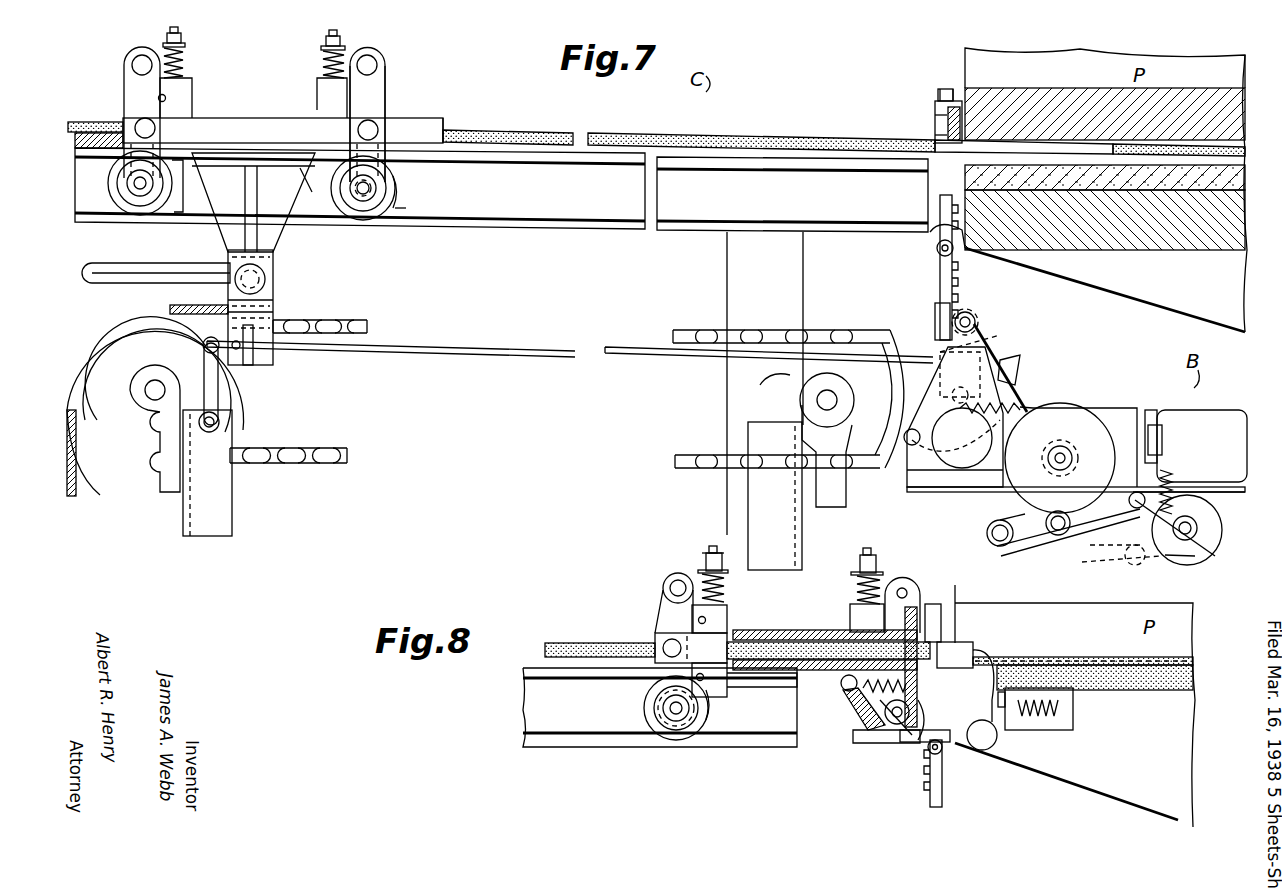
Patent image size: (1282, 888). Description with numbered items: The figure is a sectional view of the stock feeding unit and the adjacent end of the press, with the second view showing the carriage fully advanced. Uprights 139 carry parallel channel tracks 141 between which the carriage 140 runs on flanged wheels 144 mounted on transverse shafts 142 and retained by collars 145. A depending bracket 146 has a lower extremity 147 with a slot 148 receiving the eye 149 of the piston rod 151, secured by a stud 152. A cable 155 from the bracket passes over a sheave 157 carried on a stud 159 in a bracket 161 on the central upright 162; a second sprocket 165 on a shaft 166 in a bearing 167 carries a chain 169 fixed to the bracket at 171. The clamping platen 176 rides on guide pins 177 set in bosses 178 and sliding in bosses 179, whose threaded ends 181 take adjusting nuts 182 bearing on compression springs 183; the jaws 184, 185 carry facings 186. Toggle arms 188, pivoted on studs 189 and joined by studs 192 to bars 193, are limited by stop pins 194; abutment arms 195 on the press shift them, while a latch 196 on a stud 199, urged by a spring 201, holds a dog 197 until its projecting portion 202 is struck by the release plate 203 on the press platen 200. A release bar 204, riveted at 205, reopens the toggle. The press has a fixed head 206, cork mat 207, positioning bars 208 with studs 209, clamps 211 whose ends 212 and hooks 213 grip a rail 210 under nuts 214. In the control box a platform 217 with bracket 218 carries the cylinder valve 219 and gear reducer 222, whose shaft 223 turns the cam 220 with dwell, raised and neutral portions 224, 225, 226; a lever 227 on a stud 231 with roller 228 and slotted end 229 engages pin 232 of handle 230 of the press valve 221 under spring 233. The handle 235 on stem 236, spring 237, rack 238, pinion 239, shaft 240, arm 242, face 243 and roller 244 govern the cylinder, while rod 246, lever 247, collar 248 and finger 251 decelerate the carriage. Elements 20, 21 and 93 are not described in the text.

In FIG. 7, the upper guide rail 20 is at (682, 147).
In FIG. 7, the upper guide rail 21 is at (708, 138).
In FIG. 7, the chain 93 is at (886, 342).
In FIG. 7, the uprights 139 is at (804, 268).
In FIG. 7, the carriage 140 is at (308, 194).
In FIG. 8, the carriage 140 is at (760, 674).
In FIG. 7, the tracks 141 is at (501, 190).
In FIG. 8, the tracks 141 is at (736, 707).
In FIG. 7, the transverse shafts 142 is at (378, 183).
In FIG. 8, the transverse shafts 142 is at (672, 712).
In FIG. 7, the flanged wheels 144 is at (374, 210).
In FIG. 8, the flanged wheels 144 is at (686, 732).
In FIG. 7, the collars 145 is at (373, 190).
In FIG. 7, the depending bracket 146 is at (253, 202).
In FIG. 7, the lower extremity 147 is at (273, 291).
In FIG. 7, the slot 148 is at (272, 266).
In FIG. 7, the eye 149 is at (228, 264).
In FIG. 7, the piston rod 151 is at (128, 262).
In FIG. 7, the stud 152 is at (274, 301).
In FIG. 7, the cable 155 is at (76, 488).
In FIG. 7, the sheave 157 is at (155, 406).
In FIG. 7, the stud 159 is at (145, 391).
In FIG. 7, the bracket 161 is at (166, 500).
In FIG. 7, the upright 162 is at (226, 510).
In FIG. 7, the second sprocket 165 is at (760, 386).
In FIG. 7, the shaft 166 is at (815, 400).
In FIG. 7, the bearing 167 is at (803, 494).
In FIG. 7, the chain 169 is at (350, 326).
In FIG. 7, the chain attachment 171 is at (253, 314).
In FIG. 7, the platen 176 is at (288, 117).
In FIG. 8, the platen 176 is at (765, 632).
In FIG. 7, the vertical guide pins 177 is at (168, 216).
In FIG. 8, the vertical guide pins 177 is at (710, 722).
In FIG. 8, the bosses 178 is at (776, 672).
In FIG. 7, the bosses 179 is at (193, 82).
In FIG. 7, the threaded ends 181 is at (182, 35).
In FIG. 8, the threaded ends 181 is at (711, 548).
In FIG. 8, the adjusting nuts 182 is at (707, 554).
In FIG. 7, the compression springs 183 is at (184, 56).
In FIG. 8, the compression springs 183 is at (703, 576).
In FIG. 8, the jaw 184 is at (848, 684).
In FIG. 8, the jaw 185 is at (780, 634).
In FIG. 8, the facings 186 is at (832, 632).
In FIG. 7, the toggle arms 188 is at (136, 92).
In FIG. 8, the toggle arms 188 is at (664, 604).
In FIG. 7, the studs 189 is at (374, 62).
In FIG. 8, the studs 189 is at (668, 590).
In FIG. 7, the stud 192 is at (386, 74).
In FIG. 7, the bar 193 is at (415, 118).
In FIG. 8, the bar 193 is at (962, 642).
In FIG. 7, the stop pins 194 is at (168, 98).
In FIG. 8, the abutment arms 195 is at (990, 650).
In FIG. 8, the latch 196 is at (862, 717).
In FIG. 8, the dog 197 is at (868, 705).
In FIG. 8, the stud 199 is at (840, 714).
In FIG. 7, the press platen 200 is at (1052, 242).
In FIG. 8, the press platen 200 is at (1066, 754).
In FIG. 8, the spring 201 is at (904, 734).
In FIG. 7, the projecting portion 202 is at (398, 208).
In FIG. 8, the projecting portion 202 is at (920, 746).
In FIG. 7, the release plate 203 is at (936, 246).
In FIG. 8, the release plate 203 is at (941, 755).
In FIG. 7, the release bar 204 is at (118, 125).
In FIG. 7, the rivets 205 is at (102, 150).
In FIG. 7, the fixed head 206 is at (1105, 94).
In FIG. 7, the cork mat 207 is at (1115, 190).
In FIG. 7, the positioning bars 208 is at (1110, 140).
In FIG. 8, the positioning bars 208 is at (1090, 642).
In FIG. 7, the threaded studs 209 is at (947, 88).
In FIG. 7, the rail 210 is at (1085, 173).
In FIG. 7, the angular clamp 211 is at (938, 119).
In FIG. 7, the clamp end 212 is at (935, 134).
In FIG. 7, the hook portion 213 is at (945, 103).
In FIG. 7, the nut 214 is at (938, 95).
In FIG. 7, the platform 217 is at (940, 492).
In FIG. 7, the bracket portion 218 is at (930, 494).
In FIG. 7, the operating valve 219 is at (948, 438).
In FIG. 7, the cam 220 is at (1060, 458).
In FIG. 7, the press valve 221 is at (1190, 562).
In FIG. 7, the gear reducing mechanism 222 is at (1126, 410).
In FIG. 7, the driven shaft 223 is at (1062, 454).
In FIG. 7, the dwell portion 224 is at (1040, 410).
In FIG. 7, the raised portion 225 is at (1126, 561).
In FIG. 7, the raised portion 226 is at (1082, 553).
In FIG. 7, the lever 227 is at (1006, 552).
In FIG. 7, the cam roller 228 is at (1055, 538).
In FIG. 7, the slotted extremity 229 is at (1200, 525).
In FIG. 7, the operating handle 230 is at (1200, 540).
In FIG. 7, the stud 231 is at (990, 539).
In FIG. 7, the pin 232 is at (1196, 558).
In FIG. 7, the spring 233 is at (1170, 470).
In FIG. 7, the valve operating handle 235 is at (1000, 380).
In FIG. 7, the valve stem 236 is at (960, 466).
In FIG. 7, the spring 237 is at (1040, 404).
In FIG. 7, the rack 238 is at (940, 290).
In FIG. 8, the rack 238 is at (942, 800).
In FIG. 7, the pinion 239 is at (970, 311).
In FIG. 7, the shaft 240 is at (935, 320).
In FIG. 7, the arm 242 is at (978, 332).
In FIG. 7, the arcuate face 243 is at (1008, 372).
In FIG. 7, the cam roller 244 is at (936, 360).
In FIG. 7, the rod 246 is at (536, 349).
In FIG. 7, the lever 247 is at (222, 395).
In FIG. 7, the collar 248 is at (262, 360).
In FIG. 7, the finger 251 is at (262, 374).